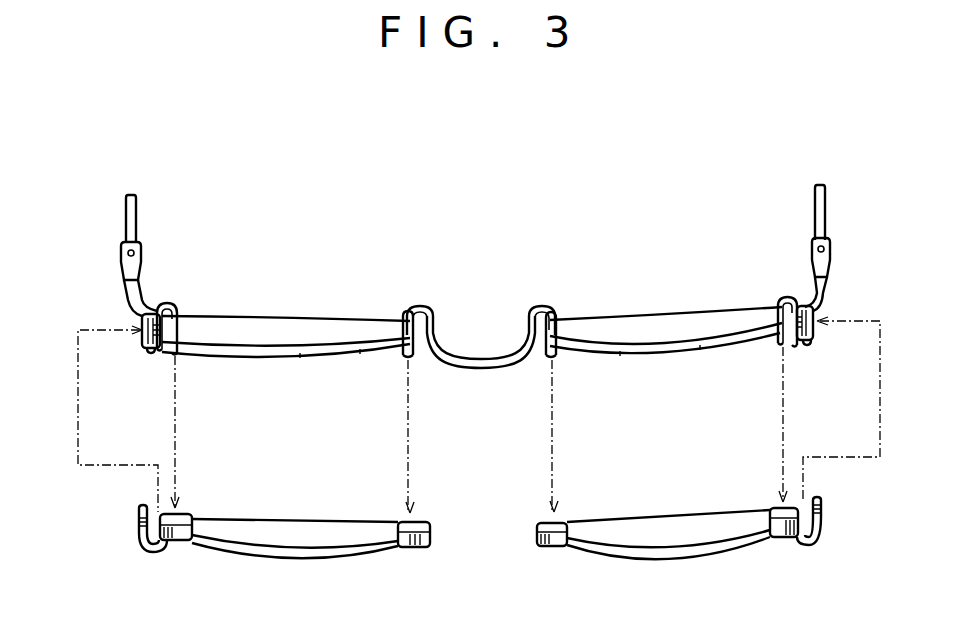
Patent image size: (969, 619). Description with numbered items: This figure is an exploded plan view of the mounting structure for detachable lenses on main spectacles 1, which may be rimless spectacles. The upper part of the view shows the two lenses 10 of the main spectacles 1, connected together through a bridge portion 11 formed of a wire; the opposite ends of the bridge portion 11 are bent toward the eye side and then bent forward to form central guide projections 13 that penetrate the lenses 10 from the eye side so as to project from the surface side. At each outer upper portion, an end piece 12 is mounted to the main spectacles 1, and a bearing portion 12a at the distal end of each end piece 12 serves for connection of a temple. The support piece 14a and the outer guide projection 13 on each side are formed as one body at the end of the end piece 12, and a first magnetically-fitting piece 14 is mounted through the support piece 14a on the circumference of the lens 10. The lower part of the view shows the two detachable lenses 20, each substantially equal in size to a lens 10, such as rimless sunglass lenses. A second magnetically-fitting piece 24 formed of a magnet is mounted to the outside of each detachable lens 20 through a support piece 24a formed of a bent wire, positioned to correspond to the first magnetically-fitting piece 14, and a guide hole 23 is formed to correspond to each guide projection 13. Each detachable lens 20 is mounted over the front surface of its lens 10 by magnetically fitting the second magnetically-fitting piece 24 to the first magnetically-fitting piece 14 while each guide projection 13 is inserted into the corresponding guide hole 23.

The main spectacles 1 is at (410, 230).
The lens 10 is at (283, 358).
The bridge portion 11 is at (489, 357).
The end piece 12 is at (142, 299).
The bearing portion 12a is at (139, 251).
The guide projection 13 is at (183, 350).
The first magnetically-fitting piece 14 is at (142, 318).
The support piece 14a is at (148, 348).
The detachable lens 20 is at (293, 531).
The guide hole 23 is at (182, 513).
The second magnetically-fitting piece 24 is at (138, 511).
The support piece 24a is at (155, 551).